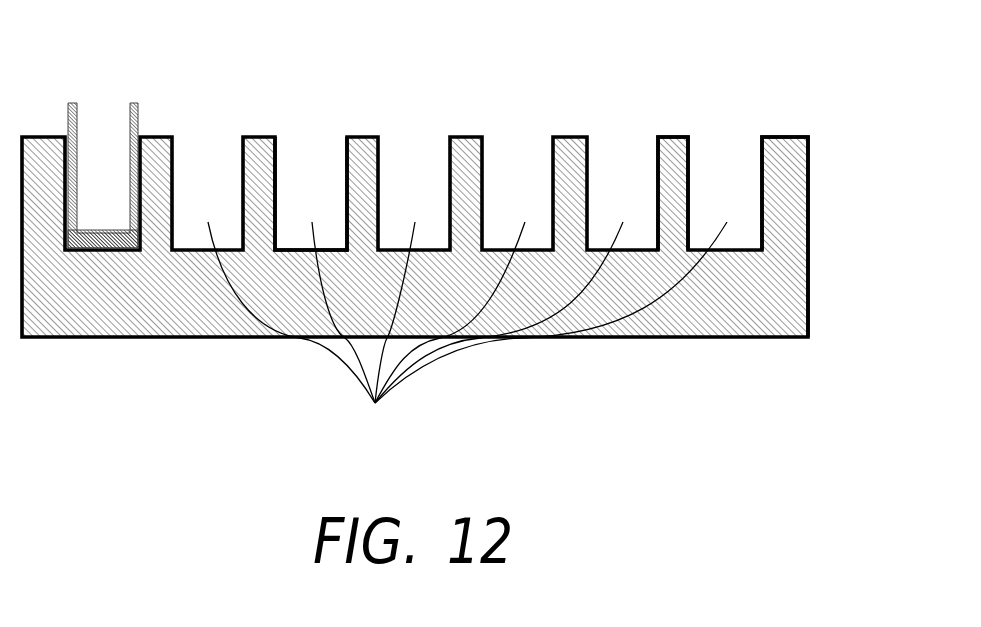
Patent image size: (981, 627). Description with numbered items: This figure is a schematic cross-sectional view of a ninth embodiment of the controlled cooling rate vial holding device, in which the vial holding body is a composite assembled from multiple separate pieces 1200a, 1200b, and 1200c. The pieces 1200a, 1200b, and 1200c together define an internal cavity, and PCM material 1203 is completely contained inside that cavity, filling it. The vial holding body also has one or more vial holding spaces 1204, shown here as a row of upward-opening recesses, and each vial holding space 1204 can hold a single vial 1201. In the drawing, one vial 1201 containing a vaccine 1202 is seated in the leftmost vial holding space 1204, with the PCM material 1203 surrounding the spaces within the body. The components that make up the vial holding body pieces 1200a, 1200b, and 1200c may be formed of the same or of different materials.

The vial holding body piece 1200a is at (808, 154).
The vial holding body piece 1200b is at (785, 137).
The vial holding body piece 1200c is at (658, 140).
The vial 1201 is at (113, 130).
The vaccine 1202 is at (100, 233).
The PCM material 1203 is at (255, 187).
The vial holding space 1204 is at (467, 326).